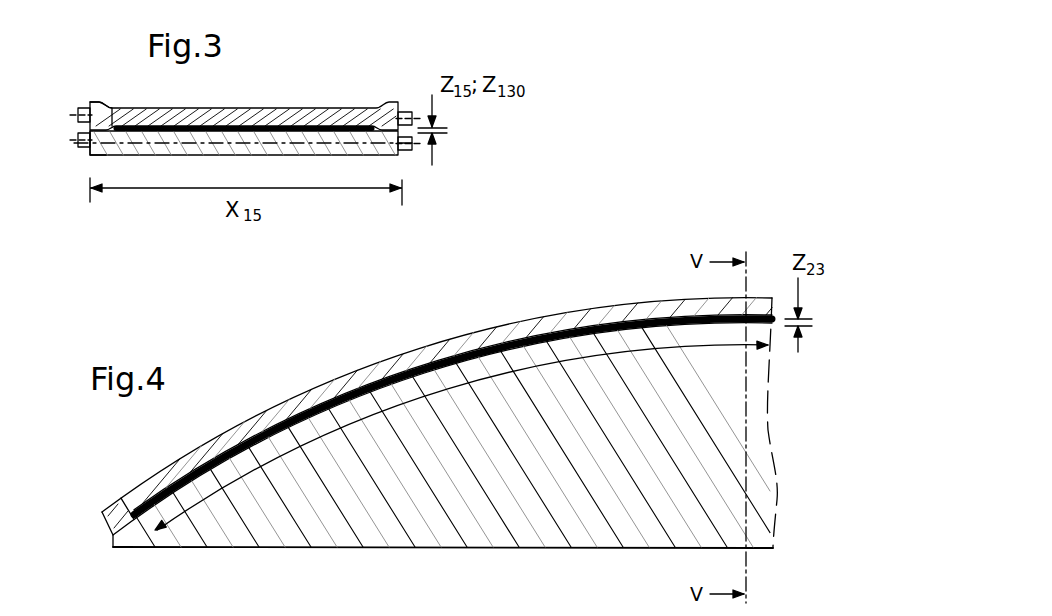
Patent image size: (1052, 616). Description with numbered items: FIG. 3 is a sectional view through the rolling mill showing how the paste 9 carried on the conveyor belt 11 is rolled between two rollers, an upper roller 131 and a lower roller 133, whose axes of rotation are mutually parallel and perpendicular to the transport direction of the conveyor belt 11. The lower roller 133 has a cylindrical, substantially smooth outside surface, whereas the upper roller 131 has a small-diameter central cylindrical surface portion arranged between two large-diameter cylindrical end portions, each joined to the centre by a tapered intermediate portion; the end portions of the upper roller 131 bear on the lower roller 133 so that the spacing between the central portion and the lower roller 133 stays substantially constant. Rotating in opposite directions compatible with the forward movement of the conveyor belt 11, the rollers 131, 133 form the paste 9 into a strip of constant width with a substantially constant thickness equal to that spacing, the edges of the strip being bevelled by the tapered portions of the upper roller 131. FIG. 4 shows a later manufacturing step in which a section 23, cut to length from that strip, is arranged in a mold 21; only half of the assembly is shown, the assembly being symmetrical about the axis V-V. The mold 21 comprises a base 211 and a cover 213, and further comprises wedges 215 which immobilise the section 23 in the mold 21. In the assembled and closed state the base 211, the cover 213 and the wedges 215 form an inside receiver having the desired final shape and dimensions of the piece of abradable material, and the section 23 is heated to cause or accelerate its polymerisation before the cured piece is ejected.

In FIG. 3, the paste 9 is at (328, 127).
In FIG. 3, the conveyor belt 11 is at (150, 132).
In FIG. 3, the upper roller 131 is at (100, 102).
In FIG. 3, the lower roller 133 is at (99, 154).
In FIG. 4, the mold 21 is at (298, 356).
In FIG. 4, the base 211 is at (331, 530).
In FIG. 4, the cover 213 is at (455, 348).
In FIG. 4, the section 23 is at (553, 330).
In FIG. 4, the wedges 215 is at (113, 503).